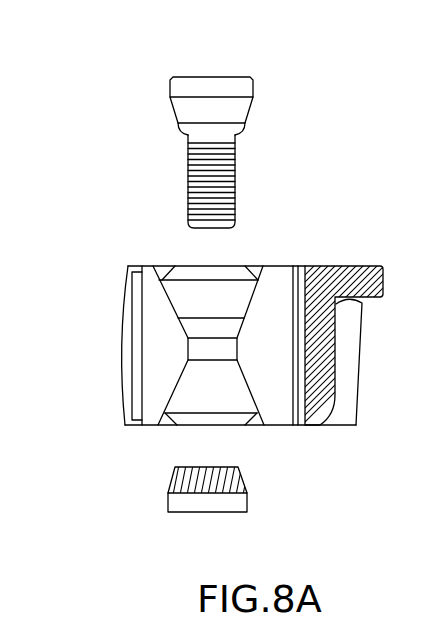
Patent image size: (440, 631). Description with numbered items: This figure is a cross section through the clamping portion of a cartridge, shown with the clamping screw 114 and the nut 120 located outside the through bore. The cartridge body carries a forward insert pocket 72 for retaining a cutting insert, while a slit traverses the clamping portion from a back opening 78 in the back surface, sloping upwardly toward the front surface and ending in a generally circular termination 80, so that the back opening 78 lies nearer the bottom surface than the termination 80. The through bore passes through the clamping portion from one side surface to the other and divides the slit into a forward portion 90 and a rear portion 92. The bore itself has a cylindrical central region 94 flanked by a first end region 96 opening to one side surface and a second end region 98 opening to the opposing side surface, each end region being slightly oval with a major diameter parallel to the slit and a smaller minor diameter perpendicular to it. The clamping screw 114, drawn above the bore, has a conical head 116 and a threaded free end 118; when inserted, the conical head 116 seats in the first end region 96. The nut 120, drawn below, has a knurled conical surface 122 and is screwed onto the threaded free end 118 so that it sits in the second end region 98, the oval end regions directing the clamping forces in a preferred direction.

The insert pocket 72 is at (354, 362).
The back opening 78 is at (128, 377).
The generally circular termination 80 is at (302, 266).
The forward portion 90 is at (150, 330).
The rear portion 92 is at (278, 290).
The cylindrical central region 94 is at (189, 338).
The first end region 96 is at (250, 316).
The second end region 98 is at (172, 390).
The clamping screw 114 is at (207, 119).
The conical head 116 is at (246, 108).
The threaded free end 118 is at (188, 186).
The nut 120 is at (284, 489).
The knurled conical surface 122 is at (245, 480).